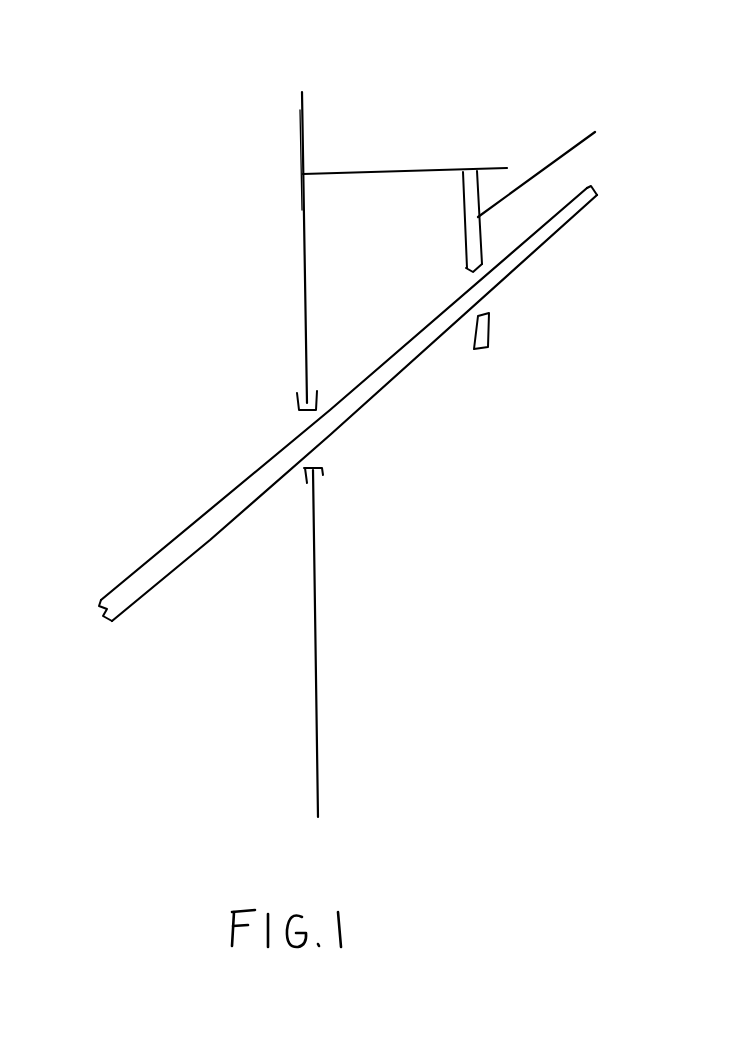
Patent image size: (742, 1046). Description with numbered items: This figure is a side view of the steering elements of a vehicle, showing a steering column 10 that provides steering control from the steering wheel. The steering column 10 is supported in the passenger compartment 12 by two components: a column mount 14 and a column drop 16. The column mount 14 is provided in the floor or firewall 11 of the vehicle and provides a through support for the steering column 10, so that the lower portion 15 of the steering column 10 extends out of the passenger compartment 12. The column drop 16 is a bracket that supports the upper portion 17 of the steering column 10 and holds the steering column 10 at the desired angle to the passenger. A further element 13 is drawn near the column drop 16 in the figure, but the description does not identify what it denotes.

The steering column 10 is at (188, 530).
The floor or firewall 11 is at (313, 633).
The passenger compartment 12 is at (543, 640).
The horizontal support member 13 is at (380, 172).
The column mount 14 is at (302, 415).
The lower portion 15 is at (158, 583).
The column drop 16 is at (635, 90).
The upper portion 17 is at (418, 358).